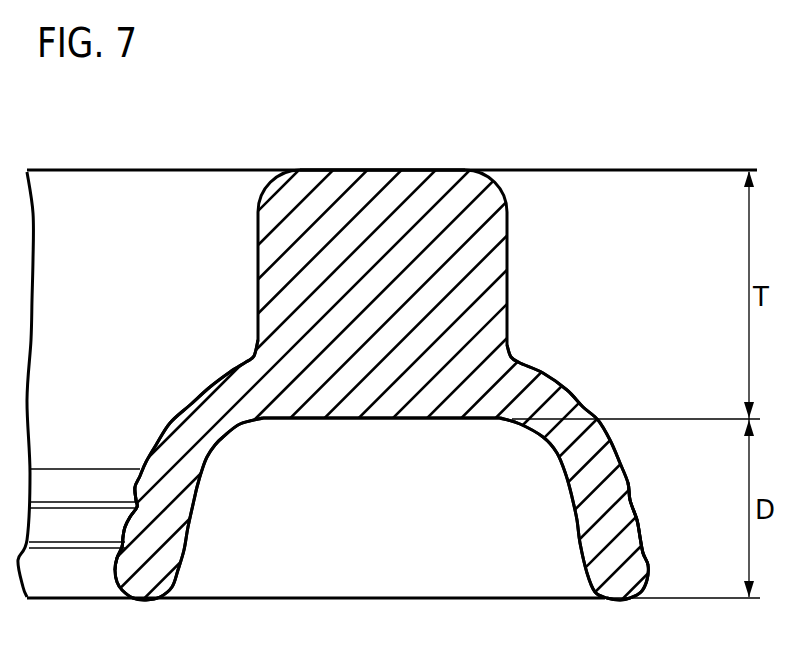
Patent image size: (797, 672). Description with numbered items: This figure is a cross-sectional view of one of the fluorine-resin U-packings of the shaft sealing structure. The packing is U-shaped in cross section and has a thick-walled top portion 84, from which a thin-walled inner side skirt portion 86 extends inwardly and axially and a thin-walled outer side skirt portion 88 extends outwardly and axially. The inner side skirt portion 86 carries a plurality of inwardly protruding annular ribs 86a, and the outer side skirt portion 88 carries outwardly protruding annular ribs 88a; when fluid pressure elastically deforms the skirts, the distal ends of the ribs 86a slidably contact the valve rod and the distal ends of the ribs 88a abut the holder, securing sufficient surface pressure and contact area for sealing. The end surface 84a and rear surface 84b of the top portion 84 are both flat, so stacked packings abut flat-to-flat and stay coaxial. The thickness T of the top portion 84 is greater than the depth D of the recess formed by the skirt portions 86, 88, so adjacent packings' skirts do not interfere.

The top portion 84 is at (463, 294).
The end surface 84a is at (418, 169).
The rear surface 84b is at (382, 420).
The inner side skirt portion 86 is at (150, 545).
The inwardly protruding annular ribs 86a is at (122, 530).
The outer side skirt portion 88 is at (615, 547).
The outwardly protruding annular ribs 88a is at (642, 523).